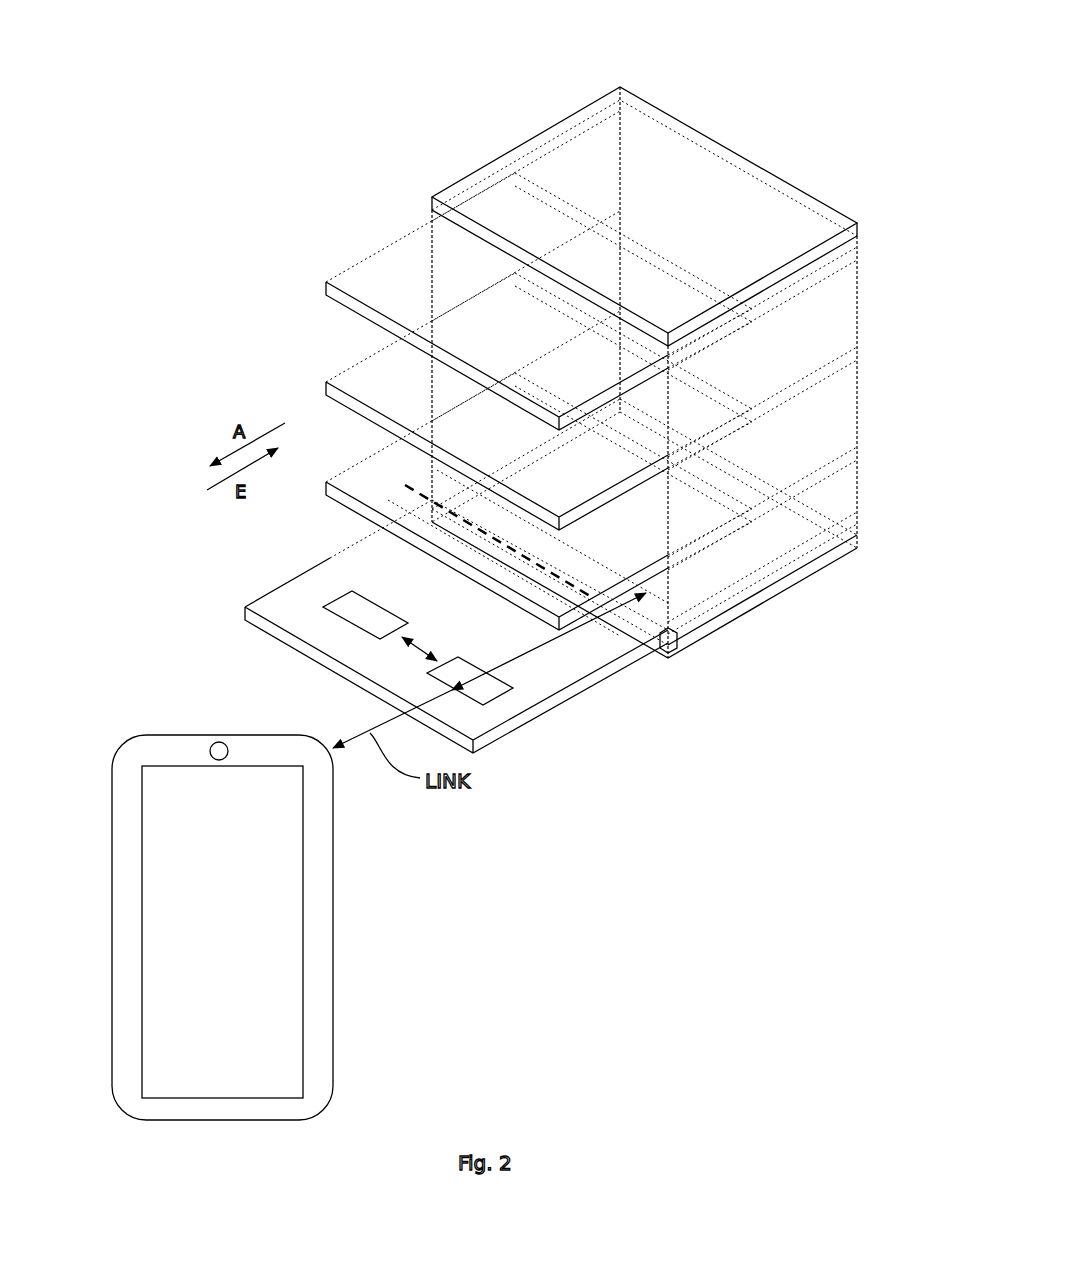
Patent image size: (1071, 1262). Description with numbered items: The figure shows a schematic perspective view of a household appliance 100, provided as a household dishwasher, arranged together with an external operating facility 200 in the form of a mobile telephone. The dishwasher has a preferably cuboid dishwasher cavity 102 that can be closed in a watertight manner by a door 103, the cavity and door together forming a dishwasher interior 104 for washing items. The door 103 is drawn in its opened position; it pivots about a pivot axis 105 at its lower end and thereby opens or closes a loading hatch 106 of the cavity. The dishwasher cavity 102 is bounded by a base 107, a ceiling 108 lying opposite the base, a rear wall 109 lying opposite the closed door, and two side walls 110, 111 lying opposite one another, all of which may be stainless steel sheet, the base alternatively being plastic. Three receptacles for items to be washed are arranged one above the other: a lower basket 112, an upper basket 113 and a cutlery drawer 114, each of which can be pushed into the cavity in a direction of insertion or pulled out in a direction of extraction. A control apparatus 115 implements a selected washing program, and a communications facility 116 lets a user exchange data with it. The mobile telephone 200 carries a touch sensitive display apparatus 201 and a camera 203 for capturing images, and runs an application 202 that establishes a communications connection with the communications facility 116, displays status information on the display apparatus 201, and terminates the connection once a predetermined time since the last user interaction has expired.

The household appliance 100 is at (476, 89).
The dishwasher cavity 102 is at (464, 173).
The door 103 is at (320, 584).
The dishwasher interior 104 is at (600, 393).
The pivot axis 105 is at (680, 650).
The loading hatch 106 is at (645, 595).
The base 107 is at (754, 560).
The ceiling 108 is at (666, 128).
The rear wall 109 is at (767, 184).
The side wall 110 is at (535, 163).
The side wall 111 is at (831, 328).
The receptacle for items to be washed 112 is at (351, 488).
The receptacle for items to be washed 113 is at (349, 388).
The receptacle for items to be washed 114 is at (388, 268).
The control apparatus 115 is at (335, 615).
The communications facility 116 is at (513, 697).
The external operating facility 200 is at (112, 815).
The display apparatus 201 is at (142, 871).
The application 202 is at (148, 916).
The camera 203 is at (221, 740).